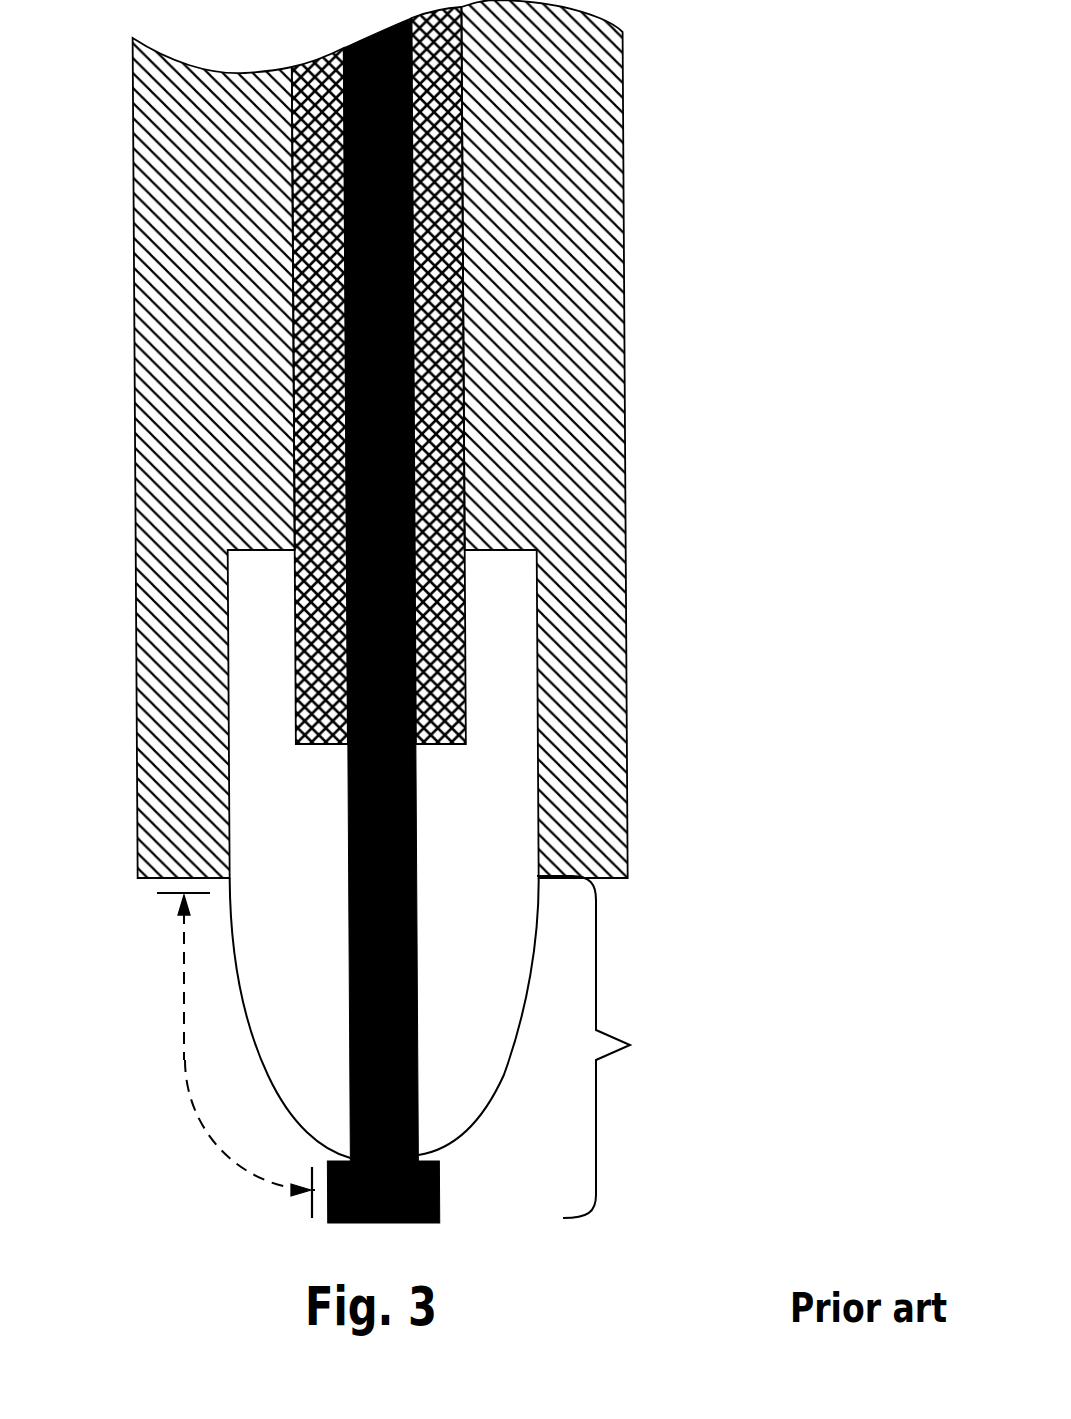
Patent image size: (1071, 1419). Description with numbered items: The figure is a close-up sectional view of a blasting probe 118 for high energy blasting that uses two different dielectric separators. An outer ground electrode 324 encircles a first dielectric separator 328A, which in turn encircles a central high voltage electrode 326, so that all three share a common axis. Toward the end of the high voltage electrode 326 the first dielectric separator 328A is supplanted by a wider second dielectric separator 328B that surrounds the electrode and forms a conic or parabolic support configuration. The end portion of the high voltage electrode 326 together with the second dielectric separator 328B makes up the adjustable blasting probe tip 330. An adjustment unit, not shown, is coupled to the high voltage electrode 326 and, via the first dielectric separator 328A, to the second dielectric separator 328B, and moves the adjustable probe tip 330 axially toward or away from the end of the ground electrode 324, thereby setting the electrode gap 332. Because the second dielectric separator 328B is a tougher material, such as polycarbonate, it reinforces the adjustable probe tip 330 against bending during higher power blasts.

The blasting probe 118 is at (833, 46).
The ground electrode 324 is at (603, 585).
The high voltage electrode 326 is at (418, 812).
The first dielectric separator 328A is at (425, 235).
The second dielectric separator 328B is at (485, 913).
The adjustable blasting probe tip 330 is at (616, 1047).
The electrode gap 332 is at (186, 1057).